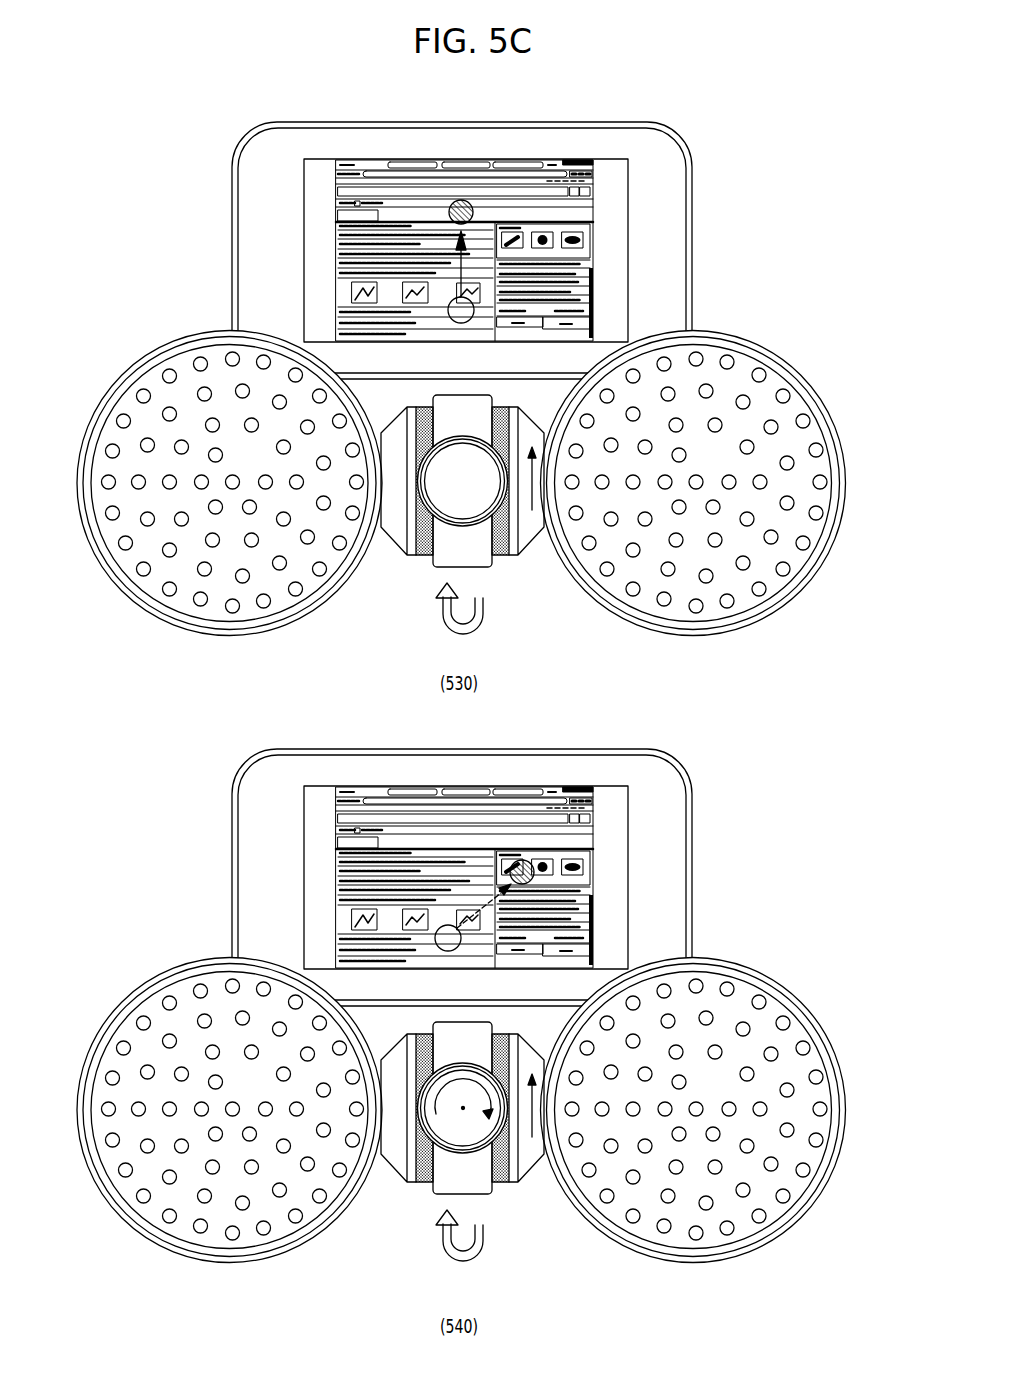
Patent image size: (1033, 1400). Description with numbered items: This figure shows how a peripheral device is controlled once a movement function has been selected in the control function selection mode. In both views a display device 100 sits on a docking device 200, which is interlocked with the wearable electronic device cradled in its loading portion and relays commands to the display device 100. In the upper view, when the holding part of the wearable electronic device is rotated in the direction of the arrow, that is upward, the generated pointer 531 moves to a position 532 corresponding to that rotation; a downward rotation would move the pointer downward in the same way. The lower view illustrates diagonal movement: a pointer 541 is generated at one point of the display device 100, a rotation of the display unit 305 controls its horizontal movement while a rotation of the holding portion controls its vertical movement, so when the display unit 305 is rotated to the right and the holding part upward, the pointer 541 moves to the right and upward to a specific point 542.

The display device 100 is at (682, 762).
The docking device 200 is at (810, 381).
The display unit 305 is at (428, 1144).
The pointer 531 is at (472, 306).
The position 532 is at (467, 206).
The pointer 541 is at (437, 932).
The specific point 542 is at (516, 866).